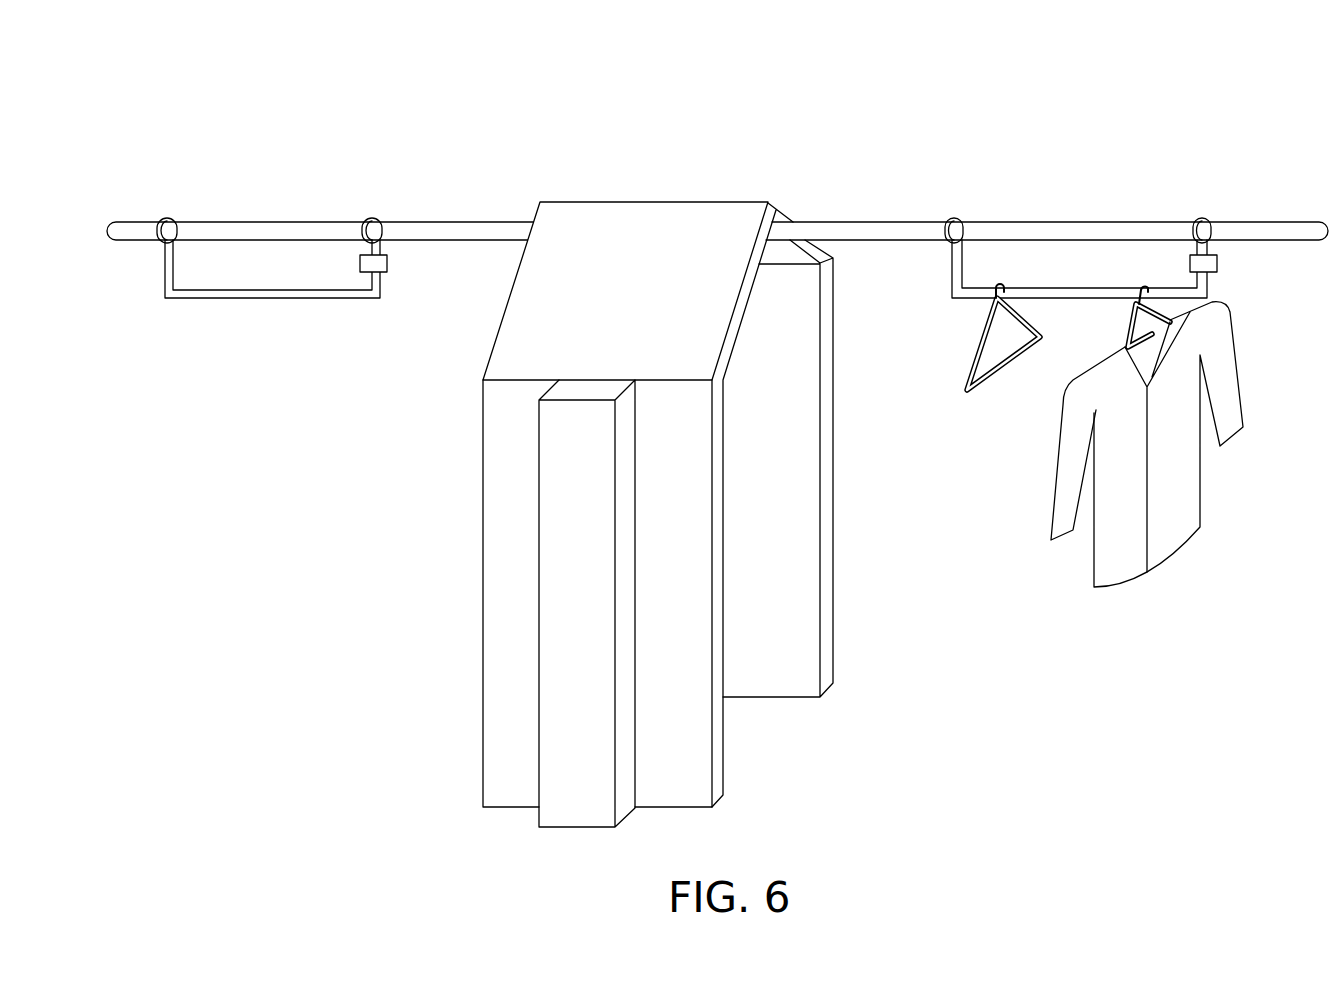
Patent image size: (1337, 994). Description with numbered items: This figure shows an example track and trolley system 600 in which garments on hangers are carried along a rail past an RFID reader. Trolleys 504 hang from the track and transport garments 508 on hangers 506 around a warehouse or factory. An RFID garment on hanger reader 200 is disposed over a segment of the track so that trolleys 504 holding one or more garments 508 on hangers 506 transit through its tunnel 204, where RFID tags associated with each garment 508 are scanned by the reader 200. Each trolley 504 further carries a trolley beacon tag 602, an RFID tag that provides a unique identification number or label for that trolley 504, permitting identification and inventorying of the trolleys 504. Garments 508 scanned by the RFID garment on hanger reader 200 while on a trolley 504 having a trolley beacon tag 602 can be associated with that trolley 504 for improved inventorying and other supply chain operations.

The track and trolley system 600 is at (933, 125).
The RFID garment on hanger reader 200 is at (752, 202).
The tunnel 204 is at (783, 523).
The trolley 504 is at (255, 299).
The hanger 506 is at (1142, 283).
The garment 508 is at (1120, 581).
The trolley beacon tag 602 is at (387, 265).